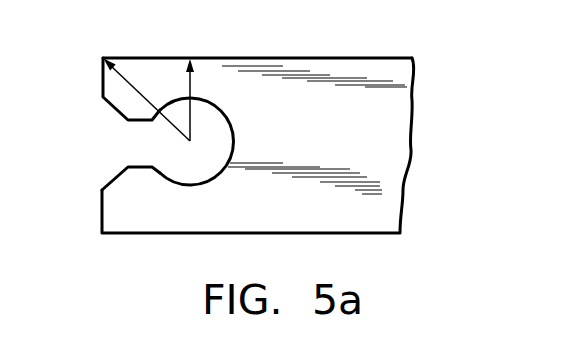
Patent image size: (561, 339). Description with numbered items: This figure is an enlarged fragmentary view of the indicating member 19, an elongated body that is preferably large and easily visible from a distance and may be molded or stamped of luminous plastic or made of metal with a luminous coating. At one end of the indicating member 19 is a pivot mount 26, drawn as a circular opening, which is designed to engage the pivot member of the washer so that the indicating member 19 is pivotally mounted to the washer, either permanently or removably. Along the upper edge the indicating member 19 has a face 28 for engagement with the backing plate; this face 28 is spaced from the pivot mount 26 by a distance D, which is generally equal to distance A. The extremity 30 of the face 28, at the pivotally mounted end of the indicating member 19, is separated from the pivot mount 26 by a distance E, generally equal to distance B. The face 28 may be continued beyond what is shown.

The indicating member 19 is at (255, 128).
The pivot mount 26 is at (237, 128).
The face 28 is at (338, 58).
The extremity of face 30 is at (103, 58).
The distance D is at (192, 78).
The distance E is at (128, 78).